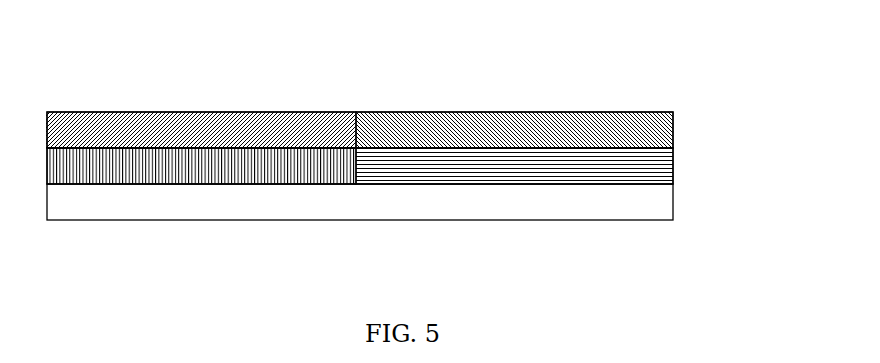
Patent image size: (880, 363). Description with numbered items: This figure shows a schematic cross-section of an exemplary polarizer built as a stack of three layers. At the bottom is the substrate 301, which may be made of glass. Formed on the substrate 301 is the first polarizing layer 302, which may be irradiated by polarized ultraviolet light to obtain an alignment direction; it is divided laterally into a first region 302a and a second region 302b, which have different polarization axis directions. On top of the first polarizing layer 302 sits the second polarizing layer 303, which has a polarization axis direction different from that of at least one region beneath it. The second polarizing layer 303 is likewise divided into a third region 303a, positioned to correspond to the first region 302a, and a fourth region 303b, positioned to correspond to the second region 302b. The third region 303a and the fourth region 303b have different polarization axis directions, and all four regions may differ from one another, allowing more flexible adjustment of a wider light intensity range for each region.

The substrate 301 is at (645, 203).
The first polarizing layer 302 is at (412, 117).
The first region 302a is at (237, 163).
The second region 302b is at (468, 172).
The second polarizing layer 303 is at (411, 92).
The third region 303a is at (133, 127).
The fourth region 303b is at (577, 127).